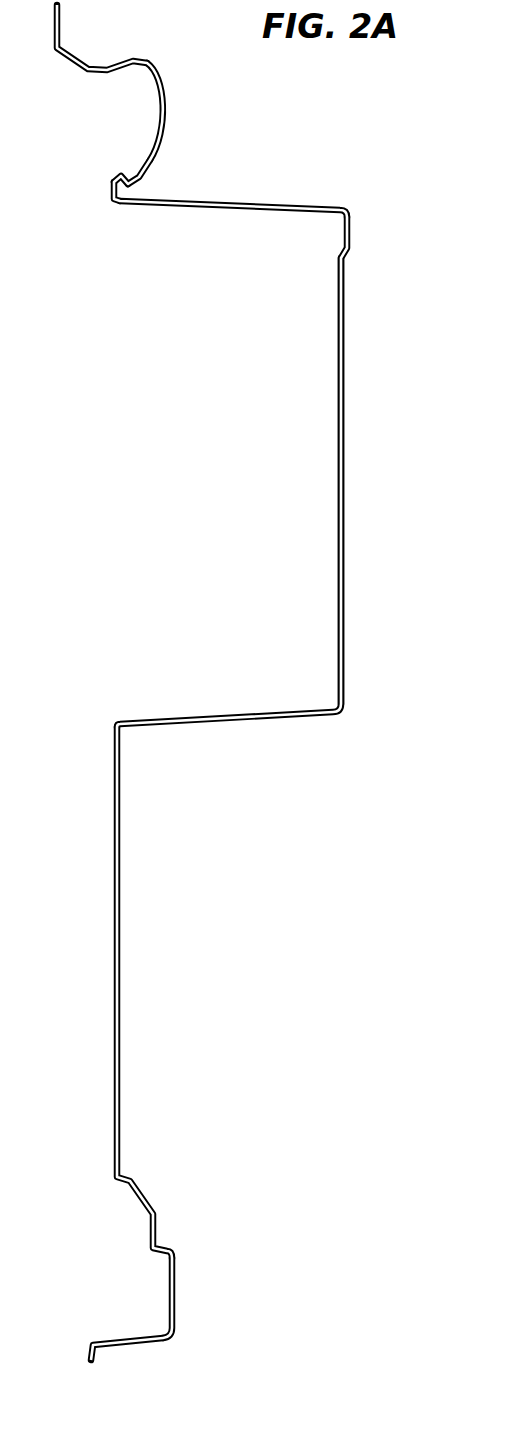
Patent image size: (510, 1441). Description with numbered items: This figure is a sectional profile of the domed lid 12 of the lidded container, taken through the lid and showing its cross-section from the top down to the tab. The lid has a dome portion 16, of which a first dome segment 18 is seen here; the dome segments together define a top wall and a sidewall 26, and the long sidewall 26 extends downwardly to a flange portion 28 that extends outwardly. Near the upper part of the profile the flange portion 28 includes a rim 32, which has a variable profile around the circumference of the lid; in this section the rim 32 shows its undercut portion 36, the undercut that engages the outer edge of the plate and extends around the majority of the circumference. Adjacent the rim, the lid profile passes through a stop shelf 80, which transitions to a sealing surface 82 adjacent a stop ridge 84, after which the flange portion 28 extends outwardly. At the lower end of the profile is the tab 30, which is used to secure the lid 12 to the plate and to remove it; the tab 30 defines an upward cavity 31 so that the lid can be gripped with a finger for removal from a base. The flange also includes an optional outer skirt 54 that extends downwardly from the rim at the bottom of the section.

The domed lid 12 is at (237, 681).
The dome portion 16 is at (347, 480).
The first dome segment 18 is at (347, 612).
The sidewall 26 is at (214, 213).
The flange portion 28 is at (165, 120).
The tab 30 is at (177, 1305).
The upward cavity 31 is at (122, 1305).
The rim 32 is at (92, 66).
The undercut portion 36 is at (100, 97).
The outer skirt 54 is at (88, 1350).
The stop shelf 80 is at (110, 191).
The sealing surface 82 is at (118, 175).
The stop ridge 84 is at (131, 171).